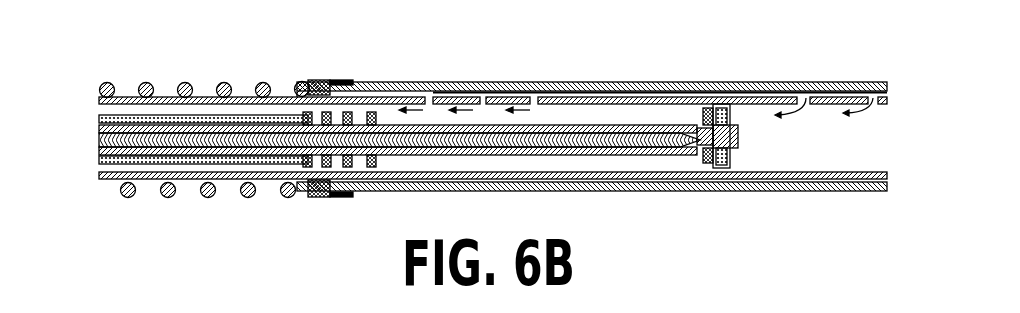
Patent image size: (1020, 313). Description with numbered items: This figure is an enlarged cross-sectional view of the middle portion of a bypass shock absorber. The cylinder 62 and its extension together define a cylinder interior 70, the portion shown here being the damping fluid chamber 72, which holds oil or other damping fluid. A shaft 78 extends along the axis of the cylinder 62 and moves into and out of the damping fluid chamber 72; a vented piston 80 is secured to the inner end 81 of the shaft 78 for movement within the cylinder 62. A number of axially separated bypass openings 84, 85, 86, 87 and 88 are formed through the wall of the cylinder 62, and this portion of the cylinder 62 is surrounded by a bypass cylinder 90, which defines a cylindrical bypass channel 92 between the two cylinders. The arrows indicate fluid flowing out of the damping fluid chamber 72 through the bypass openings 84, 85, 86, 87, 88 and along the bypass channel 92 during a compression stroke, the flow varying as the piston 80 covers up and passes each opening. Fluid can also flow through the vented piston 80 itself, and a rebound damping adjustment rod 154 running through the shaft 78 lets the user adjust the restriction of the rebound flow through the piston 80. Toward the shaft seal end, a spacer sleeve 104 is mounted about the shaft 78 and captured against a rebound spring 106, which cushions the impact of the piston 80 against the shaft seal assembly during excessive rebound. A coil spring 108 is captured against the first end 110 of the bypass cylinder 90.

The cylinder 62 is at (203, 97).
The cylinder interior 70 is at (768, 154).
The damping fluid chamber 72 is at (800, 155).
The shaft 78 is at (467, 153).
The vented piston 80 is at (722, 104).
The inner end 81 is at (653, 150).
The bypass opening 84 is at (878, 103).
The bypass opening 85 is at (810, 103).
The bypass opening 86 is at (530, 97).
The bypass opening 87 is at (480, 97).
The bypass opening 88 is at (428, 97).
The bypass cylinder 90 is at (510, 82).
The bypass channel 92 is at (405, 96).
The spacer sleeve 104 is at (180, 163).
The rebound spring 106 is at (357, 165).
The coil spring 108 is at (184, 80).
The first end 110 is at (320, 80).
The rebound damping adjustment rod 154 is at (99, 138).